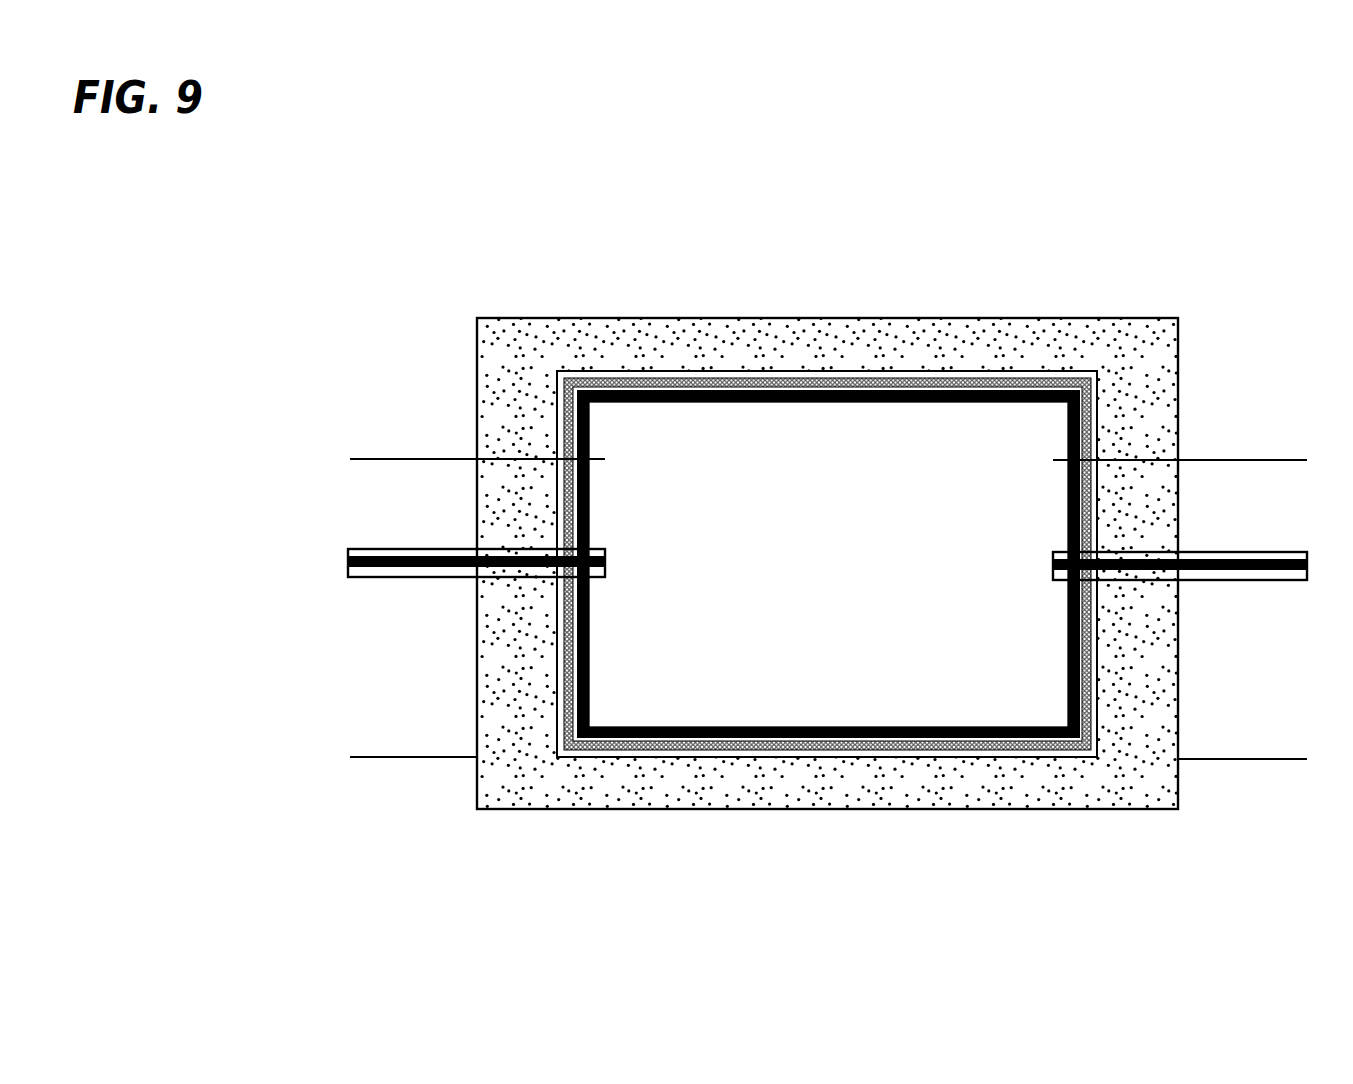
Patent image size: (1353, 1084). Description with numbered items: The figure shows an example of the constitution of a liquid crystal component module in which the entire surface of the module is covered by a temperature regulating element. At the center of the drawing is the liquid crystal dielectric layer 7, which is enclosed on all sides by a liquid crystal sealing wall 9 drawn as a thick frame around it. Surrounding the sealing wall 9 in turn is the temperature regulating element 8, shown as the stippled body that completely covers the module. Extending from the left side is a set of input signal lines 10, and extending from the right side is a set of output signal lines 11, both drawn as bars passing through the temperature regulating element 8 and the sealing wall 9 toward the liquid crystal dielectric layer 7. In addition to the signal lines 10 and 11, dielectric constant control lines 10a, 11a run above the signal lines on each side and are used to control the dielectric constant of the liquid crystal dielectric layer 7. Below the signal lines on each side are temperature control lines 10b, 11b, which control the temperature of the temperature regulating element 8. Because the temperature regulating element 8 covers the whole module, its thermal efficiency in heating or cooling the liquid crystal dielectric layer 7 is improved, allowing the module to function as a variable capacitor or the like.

The liquid crystal dielectric layer 7 is at (947, 483).
The temperature regulating element 8 is at (775, 800).
The liquid crystal sealing wall 9 is at (710, 397).
The input signal lines 10 is at (373, 577).
The dielectric constant control line 10a is at (383, 460).
The temperature control line 10b is at (393, 758).
The output signal lines 11 is at (1258, 581).
The dielectric constant control line 11a is at (1265, 460).
The temperature control line 11b is at (1268, 762).